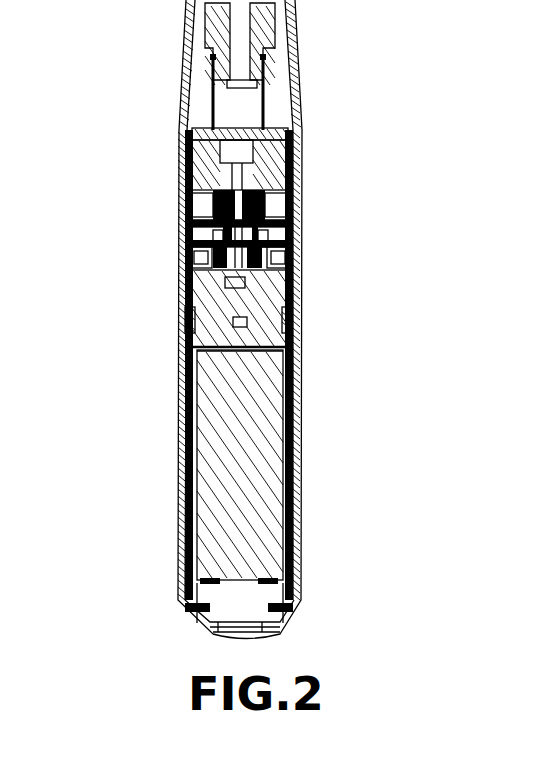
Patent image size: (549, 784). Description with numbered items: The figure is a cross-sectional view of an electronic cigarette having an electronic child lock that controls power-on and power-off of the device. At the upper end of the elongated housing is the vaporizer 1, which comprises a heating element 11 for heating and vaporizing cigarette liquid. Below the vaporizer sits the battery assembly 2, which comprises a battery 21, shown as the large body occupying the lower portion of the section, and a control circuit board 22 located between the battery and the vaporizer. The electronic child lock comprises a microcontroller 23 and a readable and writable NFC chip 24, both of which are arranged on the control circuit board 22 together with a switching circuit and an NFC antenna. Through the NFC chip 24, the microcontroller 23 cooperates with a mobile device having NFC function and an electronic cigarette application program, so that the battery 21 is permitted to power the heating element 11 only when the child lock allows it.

The vaporizer 1 is at (183, 88).
The heating element 11 is at (248, 123).
The battery assembly 2 is at (177, 432).
The battery 21 is at (255, 473).
The control circuit board 22 is at (268, 286).
The microcontroller 23 is at (228, 277).
The readable and writable NFC chip 24 is at (228, 316).